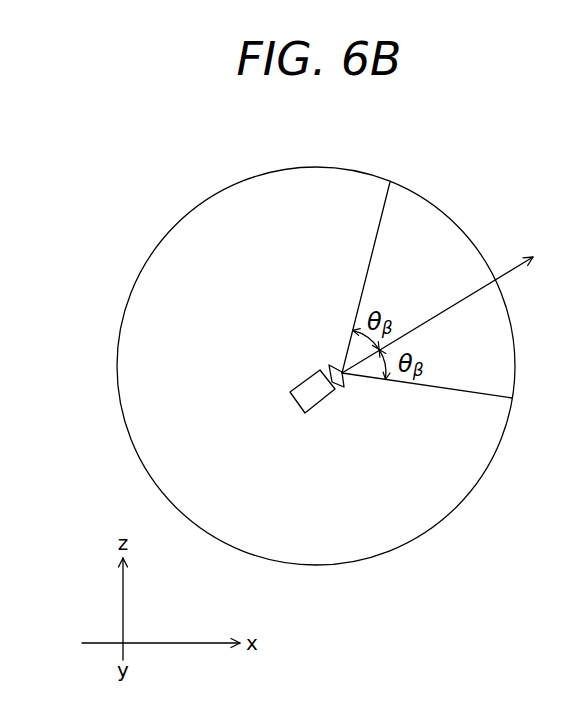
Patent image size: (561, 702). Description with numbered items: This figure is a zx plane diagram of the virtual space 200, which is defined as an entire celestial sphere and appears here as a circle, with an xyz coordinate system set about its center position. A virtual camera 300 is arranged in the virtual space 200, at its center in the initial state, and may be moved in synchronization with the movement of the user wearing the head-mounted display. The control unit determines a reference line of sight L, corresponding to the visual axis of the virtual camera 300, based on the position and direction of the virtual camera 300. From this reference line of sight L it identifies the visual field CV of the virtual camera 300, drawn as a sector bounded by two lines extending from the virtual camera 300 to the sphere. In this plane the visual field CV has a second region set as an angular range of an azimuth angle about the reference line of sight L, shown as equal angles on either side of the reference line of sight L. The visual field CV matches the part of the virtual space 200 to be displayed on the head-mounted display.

The virtual space 200 is at (243, 180).
The virtual camera 300 is at (323, 407).
The visual field CV is at (430, 215).
The reference line of sight L is at (504, 263).